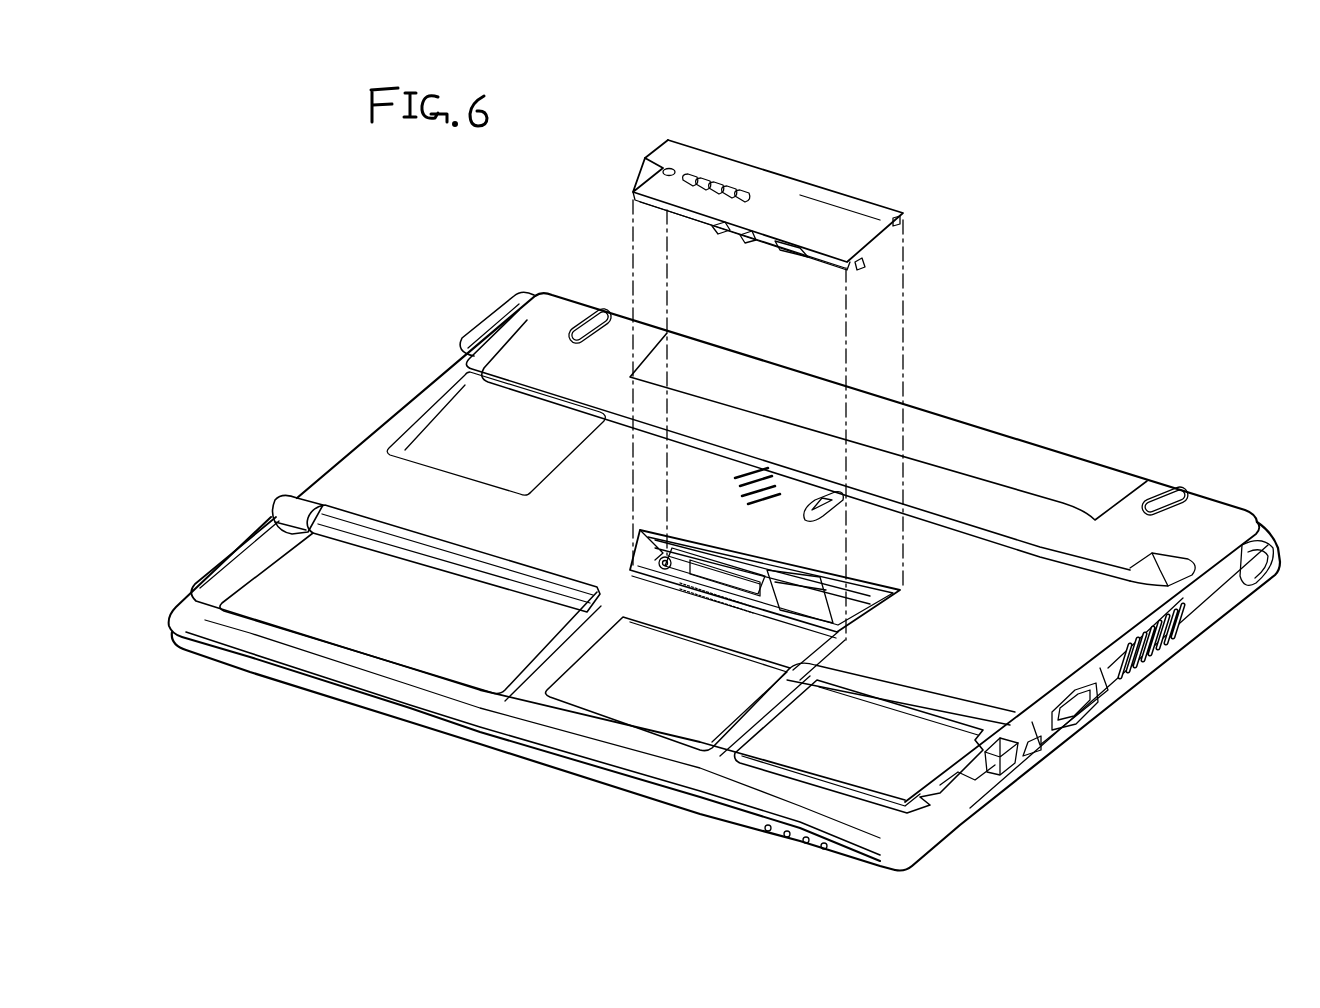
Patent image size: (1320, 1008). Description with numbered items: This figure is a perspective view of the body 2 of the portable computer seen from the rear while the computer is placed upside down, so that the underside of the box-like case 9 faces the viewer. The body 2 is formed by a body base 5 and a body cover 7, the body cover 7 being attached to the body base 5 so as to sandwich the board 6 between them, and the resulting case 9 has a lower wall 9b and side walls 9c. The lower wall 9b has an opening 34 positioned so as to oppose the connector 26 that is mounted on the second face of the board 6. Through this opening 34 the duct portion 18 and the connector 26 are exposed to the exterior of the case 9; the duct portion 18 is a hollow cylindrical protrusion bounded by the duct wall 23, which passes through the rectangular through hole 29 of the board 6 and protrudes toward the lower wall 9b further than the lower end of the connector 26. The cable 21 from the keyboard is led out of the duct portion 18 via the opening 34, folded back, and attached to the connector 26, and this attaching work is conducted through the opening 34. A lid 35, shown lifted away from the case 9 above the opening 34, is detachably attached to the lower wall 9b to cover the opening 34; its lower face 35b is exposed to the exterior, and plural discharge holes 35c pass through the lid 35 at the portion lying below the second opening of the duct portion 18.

The body 2 is at (1090, 132).
The body base 5 is at (362, 470).
The board 6 is at (748, 605).
The body cover 7 is at (205, 663).
The case 9 is at (1090, 485).
The lower wall 9b is at (1120, 640).
The side walls 9c is at (1025, 762).
The duct portion 18 is at (706, 598).
The cable 21 is at (678, 560).
The duct wall 23 is at (700, 592).
The connector 26 is at (762, 570).
The through hole 29 is at (796, 585).
The opening 34 is at (895, 562).
The lid 35 is at (803, 190).
The lower face 35b is at (845, 210).
The discharge holes 35c is at (733, 188).